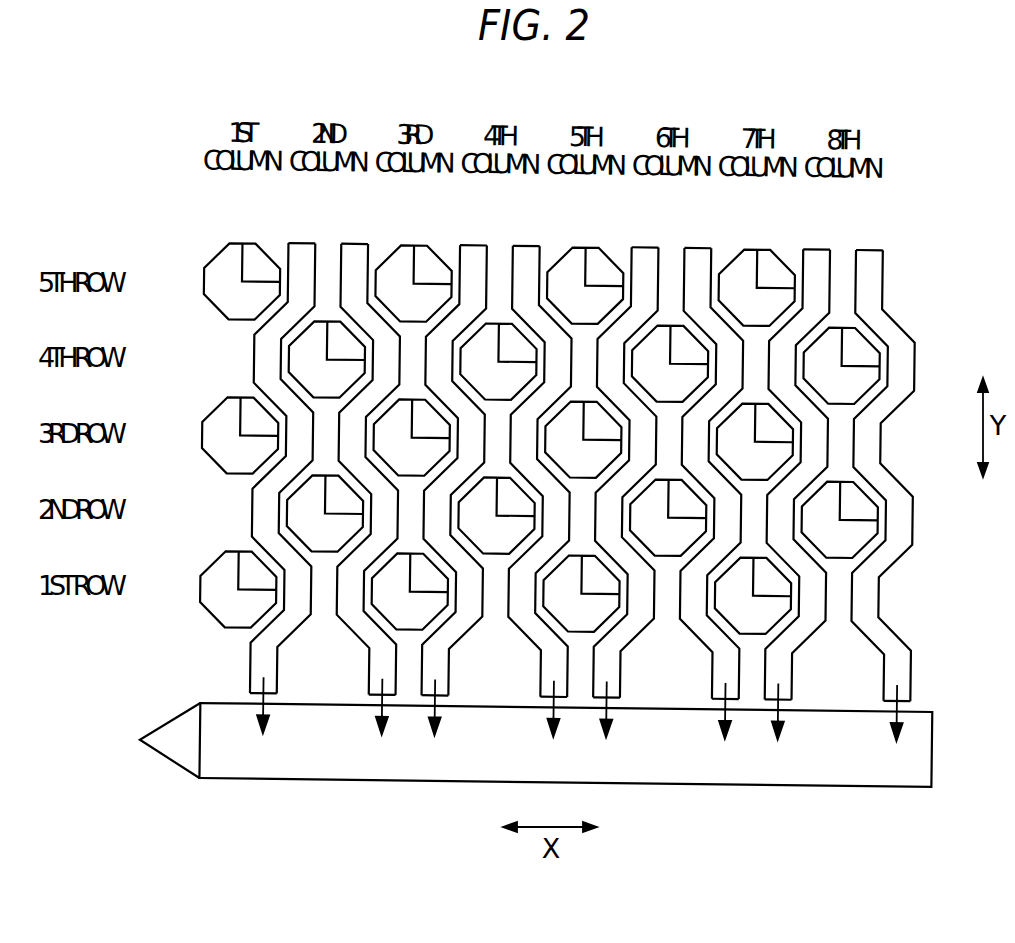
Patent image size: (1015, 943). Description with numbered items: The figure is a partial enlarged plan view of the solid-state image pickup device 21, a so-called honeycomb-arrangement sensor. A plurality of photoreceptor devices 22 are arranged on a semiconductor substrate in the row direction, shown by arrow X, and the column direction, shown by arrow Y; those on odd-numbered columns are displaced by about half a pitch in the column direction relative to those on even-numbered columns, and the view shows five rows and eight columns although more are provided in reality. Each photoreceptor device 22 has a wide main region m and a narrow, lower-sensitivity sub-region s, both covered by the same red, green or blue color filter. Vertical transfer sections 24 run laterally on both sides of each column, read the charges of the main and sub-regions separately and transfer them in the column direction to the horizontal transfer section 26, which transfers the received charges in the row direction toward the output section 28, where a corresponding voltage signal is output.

The solid-state image pickup device 21 is at (579, 425).
The photoreceptor device 22 is at (393, 252).
The vertical transfer section 24 is at (299, 243).
The horizontal transfer section 26 is at (850, 788).
The output section 28 is at (180, 753).